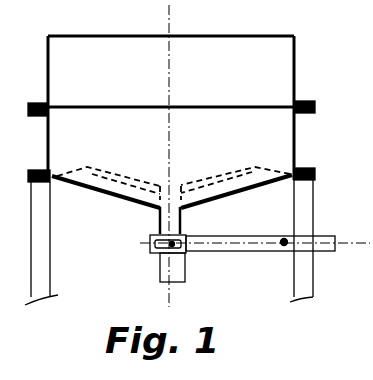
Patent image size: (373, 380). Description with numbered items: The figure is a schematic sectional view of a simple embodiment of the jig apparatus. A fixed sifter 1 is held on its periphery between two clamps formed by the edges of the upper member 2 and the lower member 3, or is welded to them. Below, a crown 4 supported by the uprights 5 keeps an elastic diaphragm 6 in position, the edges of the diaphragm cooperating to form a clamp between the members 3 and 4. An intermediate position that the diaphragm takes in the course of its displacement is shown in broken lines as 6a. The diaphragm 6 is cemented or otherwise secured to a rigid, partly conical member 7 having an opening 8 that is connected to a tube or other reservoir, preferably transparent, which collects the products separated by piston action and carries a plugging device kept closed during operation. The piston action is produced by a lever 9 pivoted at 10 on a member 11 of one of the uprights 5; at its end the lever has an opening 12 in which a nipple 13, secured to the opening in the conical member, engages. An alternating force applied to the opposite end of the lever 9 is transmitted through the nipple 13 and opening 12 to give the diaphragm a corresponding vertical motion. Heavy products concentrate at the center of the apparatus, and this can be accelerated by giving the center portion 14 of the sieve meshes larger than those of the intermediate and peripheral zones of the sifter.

The fixed sifter 1 is at (251, 105).
The upper member 2 is at (308, 63).
The lower member 3 is at (297, 140).
The crown 4 is at (310, 181).
The uprights 5 is at (316, 277).
The elastic diaphragm 6 is at (79, 183).
The intermediate position of the diaphragm 6a is at (123, 176).
The rigid partly conical member 7 is at (227, 200).
The opening 8 is at (160, 265).
The lever 9 is at (326, 232).
The pivot 10 is at (285, 238).
The member of upright 11 is at (285, 252).
The opening in lever 12 is at (186, 252).
The nipple 13 is at (150, 235).
The center portion of the sieve 14 is at (165, 107).